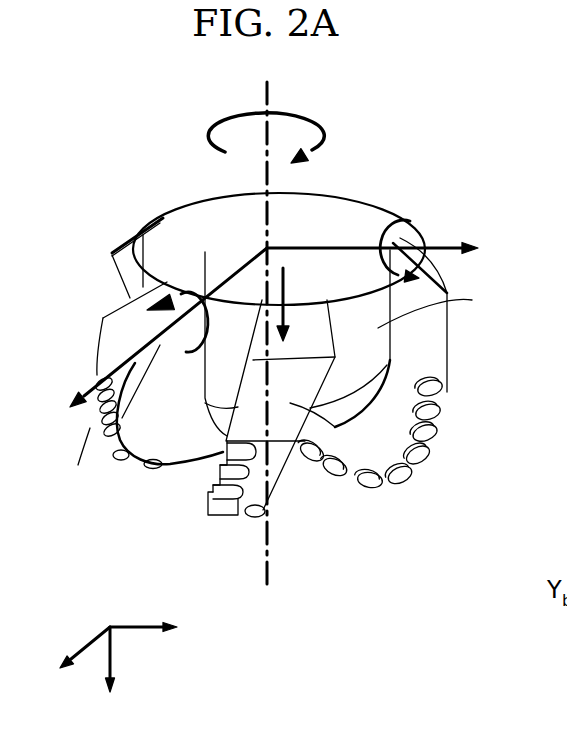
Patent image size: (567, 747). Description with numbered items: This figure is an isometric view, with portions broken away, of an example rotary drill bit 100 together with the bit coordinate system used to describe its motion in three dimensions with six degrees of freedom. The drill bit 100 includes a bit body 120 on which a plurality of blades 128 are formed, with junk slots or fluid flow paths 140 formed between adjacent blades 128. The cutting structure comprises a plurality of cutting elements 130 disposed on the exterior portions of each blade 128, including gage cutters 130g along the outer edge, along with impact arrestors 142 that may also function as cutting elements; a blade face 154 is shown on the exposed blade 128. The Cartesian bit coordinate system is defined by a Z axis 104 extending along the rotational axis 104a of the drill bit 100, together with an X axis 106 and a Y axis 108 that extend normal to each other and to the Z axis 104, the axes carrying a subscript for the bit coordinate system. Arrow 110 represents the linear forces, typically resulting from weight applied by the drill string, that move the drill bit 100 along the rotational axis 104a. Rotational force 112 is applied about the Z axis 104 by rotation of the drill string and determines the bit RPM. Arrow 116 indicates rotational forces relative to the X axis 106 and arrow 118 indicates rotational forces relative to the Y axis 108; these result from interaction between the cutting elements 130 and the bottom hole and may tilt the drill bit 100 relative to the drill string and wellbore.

The drill bit 100 is at (142, 138).
The Z axis 104 is at (114, 650).
The rotational axis 104a is at (263, 90).
The X axis 106 is at (434, 245).
The Y axis 108 is at (255, 247).
The arrow 110 is at (287, 276).
The rotational force 112 is at (300, 112).
The arrow 116 is at (406, 220).
The arrow 118 is at (188, 292).
The bit body 120 is at (345, 190).
The blades 128 is at (124, 229).
The cutting elements 130 is at (92, 440).
The gauge cutting elements 130g is at (225, 447).
The junk slots 140 is at (180, 397).
The impact arrestors 142 is at (151, 470).
The blade face 154 is at (336, 428).